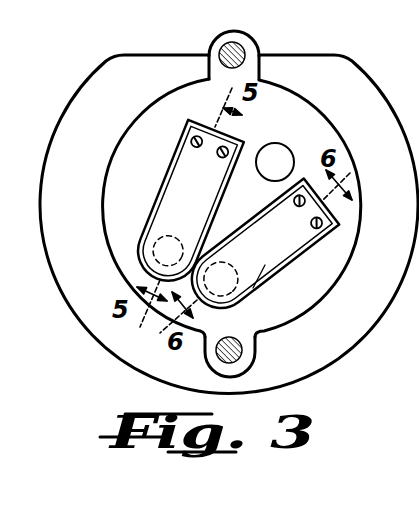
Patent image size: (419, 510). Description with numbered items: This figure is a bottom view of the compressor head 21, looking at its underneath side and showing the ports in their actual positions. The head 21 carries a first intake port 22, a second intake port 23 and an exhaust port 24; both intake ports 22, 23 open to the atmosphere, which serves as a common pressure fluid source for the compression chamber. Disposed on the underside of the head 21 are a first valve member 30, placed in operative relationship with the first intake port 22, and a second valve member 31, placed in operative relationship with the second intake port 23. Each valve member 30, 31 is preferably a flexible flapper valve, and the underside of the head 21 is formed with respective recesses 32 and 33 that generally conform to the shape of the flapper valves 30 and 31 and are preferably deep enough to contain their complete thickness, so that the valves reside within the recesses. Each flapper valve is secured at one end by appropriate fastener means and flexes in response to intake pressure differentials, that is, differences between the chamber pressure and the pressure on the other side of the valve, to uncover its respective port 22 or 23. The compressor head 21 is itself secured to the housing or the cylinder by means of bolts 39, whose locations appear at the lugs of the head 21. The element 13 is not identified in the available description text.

The casing 13 is at (180, 208).
The head 21 is at (63, 259).
The first intake port 22 is at (170, 236).
The second intake port 23 is at (232, 262).
The exhaust port 24 is at (291, 159).
The first valve member 30 is at (168, 192).
The second valve member 31 is at (258, 290).
The recess 32 is at (171, 160).
The recess 33 is at (304, 253).
The bolts 39 is at (240, 51).